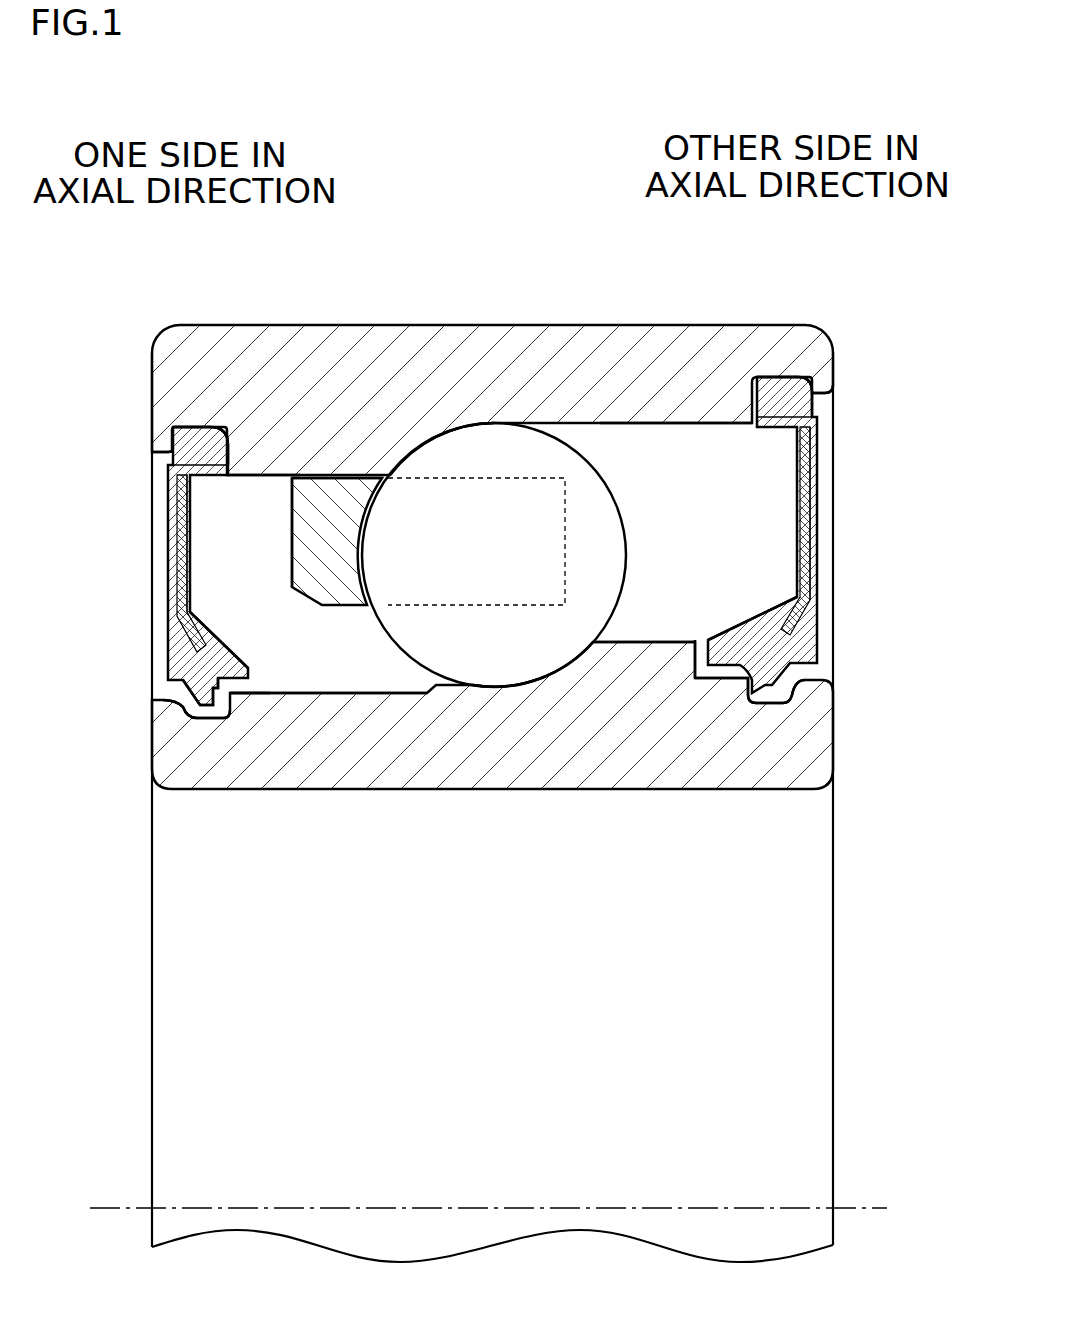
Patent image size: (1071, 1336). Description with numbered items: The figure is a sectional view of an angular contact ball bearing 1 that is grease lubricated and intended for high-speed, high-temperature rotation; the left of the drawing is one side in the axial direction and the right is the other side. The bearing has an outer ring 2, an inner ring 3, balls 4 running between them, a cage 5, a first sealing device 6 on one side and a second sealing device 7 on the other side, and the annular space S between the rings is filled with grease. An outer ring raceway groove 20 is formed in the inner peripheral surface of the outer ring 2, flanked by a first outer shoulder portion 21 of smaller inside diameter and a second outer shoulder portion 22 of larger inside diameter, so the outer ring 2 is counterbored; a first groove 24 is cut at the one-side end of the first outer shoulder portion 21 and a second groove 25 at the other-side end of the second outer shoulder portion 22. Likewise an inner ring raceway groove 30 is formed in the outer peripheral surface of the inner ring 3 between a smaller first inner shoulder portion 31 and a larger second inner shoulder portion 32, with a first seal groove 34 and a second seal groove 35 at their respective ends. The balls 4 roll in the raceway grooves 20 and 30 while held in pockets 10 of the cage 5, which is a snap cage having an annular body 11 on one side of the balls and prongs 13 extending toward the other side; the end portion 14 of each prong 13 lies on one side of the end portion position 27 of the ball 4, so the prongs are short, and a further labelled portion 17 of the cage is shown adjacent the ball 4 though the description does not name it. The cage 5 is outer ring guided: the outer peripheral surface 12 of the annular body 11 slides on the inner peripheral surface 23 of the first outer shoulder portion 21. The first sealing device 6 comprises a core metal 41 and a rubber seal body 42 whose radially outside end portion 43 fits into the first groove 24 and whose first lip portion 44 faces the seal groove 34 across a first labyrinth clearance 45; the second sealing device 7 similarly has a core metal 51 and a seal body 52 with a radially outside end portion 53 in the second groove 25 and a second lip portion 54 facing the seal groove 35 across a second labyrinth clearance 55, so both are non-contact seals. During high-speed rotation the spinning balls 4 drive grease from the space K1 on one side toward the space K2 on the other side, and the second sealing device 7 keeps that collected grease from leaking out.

The angular contact ball bearing 1 is at (597, 318).
The outer ring 2 is at (470, 382).
The inner ring 3 is at (440, 752).
The ball 4 is at (508, 462).
The cage 5 is at (348, 478).
The first sealing device 6 is at (167, 610).
The second sealing device 7 is at (817, 565).
The pocket 10 is at (456, 605).
The annular body 11 is at (300, 540).
The outer peripheral surface of the annular body 12 is at (390, 475).
The prong 13 is at (490, 580).
The end portion of the prong 14 is at (567, 513).
The spacer concave surface 17 is at (362, 520).
The outer ring raceway groove 20 is at (437, 450).
The first outer shoulder portion 21 is at (262, 473).
The second outer shoulder portion 22 is at (690, 420).
The inner peripheral surface of the first outer shoulder portion 23 is at (320, 478).
The first groove 24 is at (165, 452).
The second groove 25 is at (815, 400).
The end portion position of the ball 27 is at (625, 553).
The inner ring raceway groove 30 is at (548, 655).
The first inner shoulder portion 31 is at (300, 705).
The second inner shoulder portion 32 is at (660, 655).
The first seal groove 34 is at (185, 688).
The second seal groove 35 is at (810, 672).
The core metal 41 is at (178, 500).
The seal body 42 is at (178, 647).
The radially outside end portion 43 is at (215, 430).
The first lip portion 44 is at (232, 672).
The first labyrinth clearance 45 is at (248, 690).
The core metal 51 is at (803, 468).
The seal body 52 is at (808, 633).
The radially outside end portion 53 is at (772, 385).
The second lip portion 54 is at (745, 655).
The second labyrinth clearance 55 is at (700, 640).
The space on one side in the axial direction K1 is at (215, 553).
The space on the other side in the axial direction K2 is at (710, 493).
The annular space S is at (225, 567).